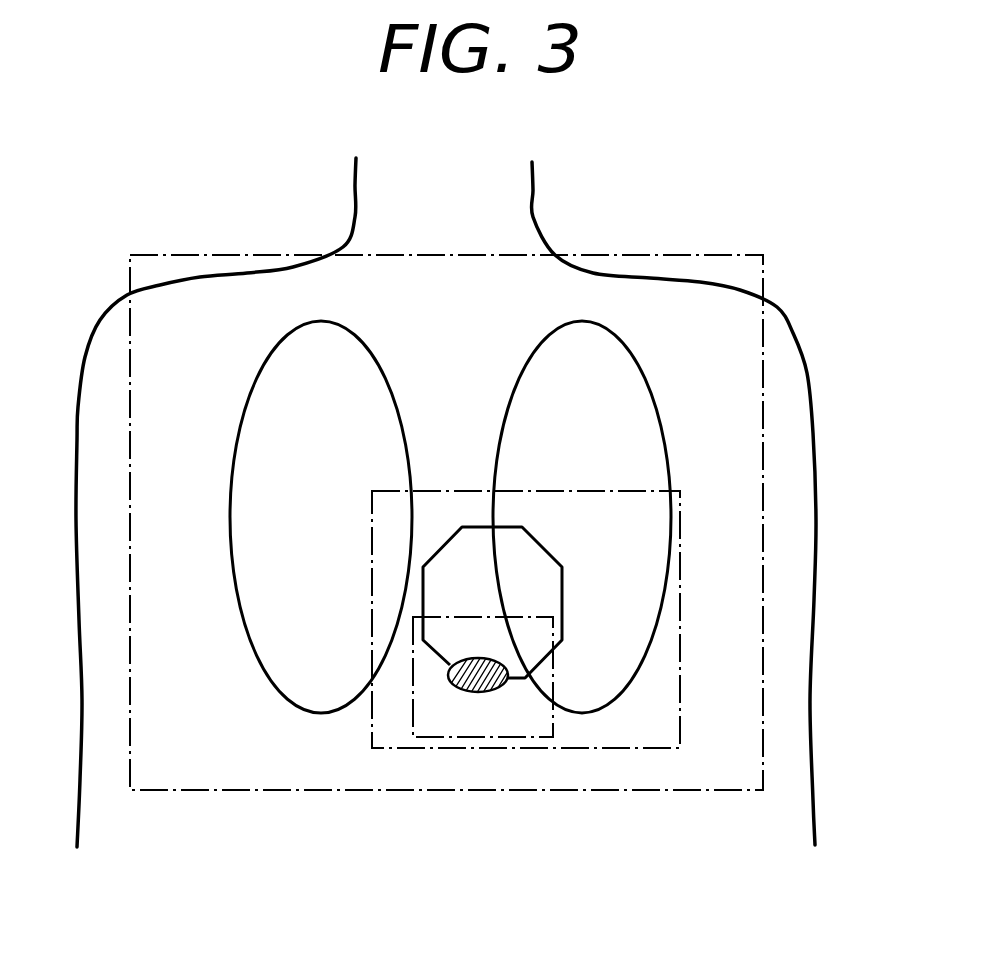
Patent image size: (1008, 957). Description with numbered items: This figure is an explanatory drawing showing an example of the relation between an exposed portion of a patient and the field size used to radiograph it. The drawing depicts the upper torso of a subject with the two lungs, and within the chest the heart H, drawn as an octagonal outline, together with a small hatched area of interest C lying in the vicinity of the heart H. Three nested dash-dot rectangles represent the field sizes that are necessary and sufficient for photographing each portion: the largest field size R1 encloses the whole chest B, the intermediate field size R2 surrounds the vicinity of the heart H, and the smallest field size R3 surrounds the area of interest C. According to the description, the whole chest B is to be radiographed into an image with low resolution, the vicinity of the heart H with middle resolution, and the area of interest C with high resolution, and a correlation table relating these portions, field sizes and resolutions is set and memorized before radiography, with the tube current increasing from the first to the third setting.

The whole chest B is at (748, 352).
The heart H is at (562, 593).
The area of interest C is at (478, 694).
The field size for whole chest R1 is at (647, 790).
The field size for vicinity of heart R2 is at (618, 487).
The field size for area of interest R3 is at (413, 713).